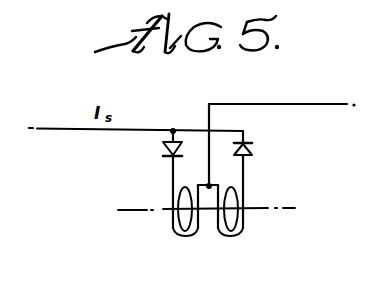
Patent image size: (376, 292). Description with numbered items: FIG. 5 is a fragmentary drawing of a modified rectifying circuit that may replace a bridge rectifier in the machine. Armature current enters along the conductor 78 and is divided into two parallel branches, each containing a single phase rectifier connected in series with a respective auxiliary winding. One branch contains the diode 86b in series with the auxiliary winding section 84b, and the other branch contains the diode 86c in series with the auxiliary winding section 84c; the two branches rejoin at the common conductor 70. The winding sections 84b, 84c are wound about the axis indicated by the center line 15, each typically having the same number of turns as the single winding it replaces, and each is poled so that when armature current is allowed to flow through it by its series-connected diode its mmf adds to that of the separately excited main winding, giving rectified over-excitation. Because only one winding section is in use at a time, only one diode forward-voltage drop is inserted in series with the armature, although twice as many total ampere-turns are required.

The input conductor carrying signal current Is 78 is at (45, 128).
The output/return conductor 70 is at (288, 104).
The diode 86b is at (163, 149).
The diode 86c is at (252, 153).
The auxiliary winding section 84b is at (190, 236).
The auxiliary winding section 84c is at (222, 236).
The magnetic axis / center line 15 is at (135, 212).